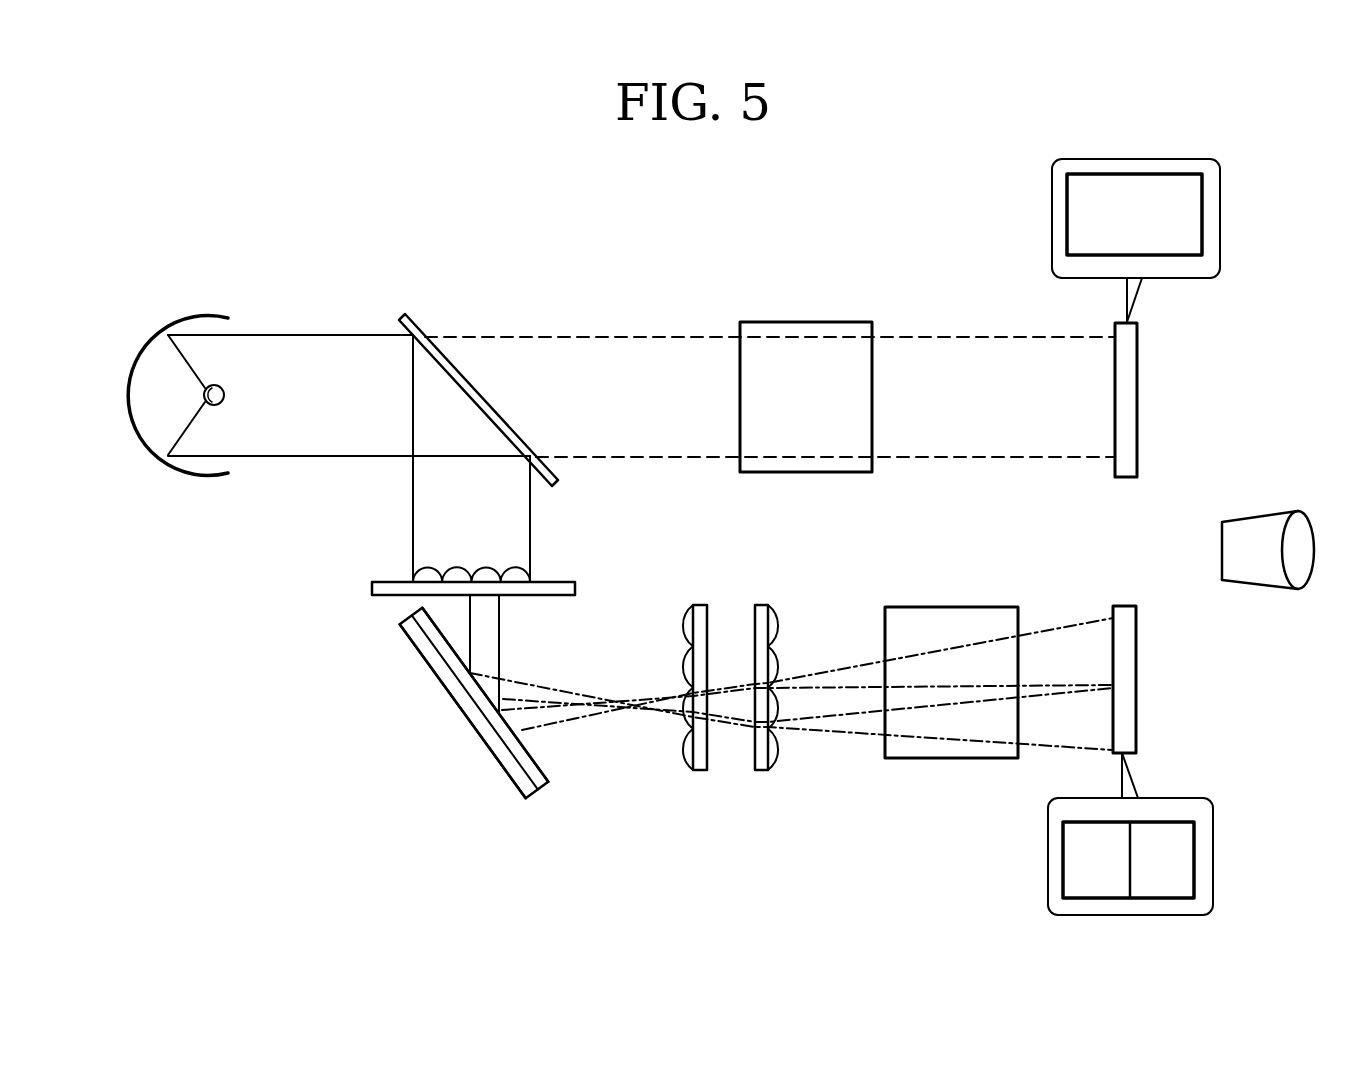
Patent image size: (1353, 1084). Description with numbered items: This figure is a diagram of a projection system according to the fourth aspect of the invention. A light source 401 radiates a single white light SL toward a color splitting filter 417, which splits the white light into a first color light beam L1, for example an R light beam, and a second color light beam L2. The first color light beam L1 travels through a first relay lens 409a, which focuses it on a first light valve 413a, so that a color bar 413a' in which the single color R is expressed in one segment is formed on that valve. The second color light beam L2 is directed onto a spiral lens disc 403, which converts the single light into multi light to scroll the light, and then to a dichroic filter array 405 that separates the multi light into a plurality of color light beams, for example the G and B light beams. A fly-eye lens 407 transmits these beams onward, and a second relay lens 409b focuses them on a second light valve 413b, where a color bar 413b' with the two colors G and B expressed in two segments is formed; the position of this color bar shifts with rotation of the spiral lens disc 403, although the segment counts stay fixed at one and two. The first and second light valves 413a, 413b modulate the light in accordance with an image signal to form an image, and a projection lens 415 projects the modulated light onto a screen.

The light source 401 is at (155, 342).
The single white light SL is at (297, 332).
The color splitting filter 417 is at (420, 317).
The first color light beam L1 is at (612, 335).
The second color light beam L2 is at (413, 507).
The spiral lens disc 403 is at (372, 590).
The dichroic filter array 405 is at (452, 690).
The G color G is at (548, 782).
The B color B is at (537, 797).
The fly-eye lens 407 is at (699, 770).
The first relay lens 409a is at (817, 325).
The second relay lens 409b is at (938, 758).
The first light valve 413a is at (1181, 400).
The color bar 413a' is at (1189, 240).
The second light valve 413b is at (1178, 679).
The color bar 413b' is at (1185, 834).
The projection lens 415 is at (1253, 582).